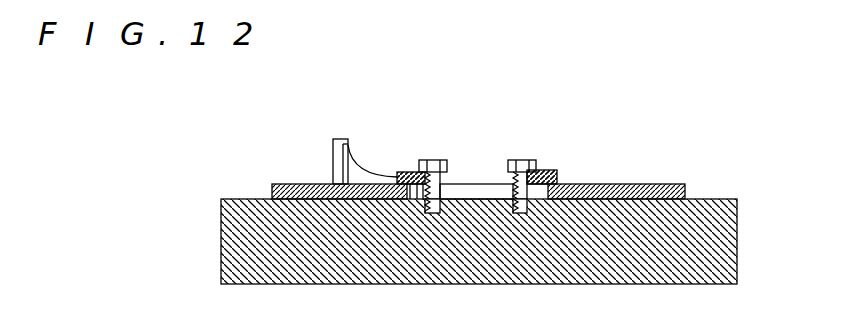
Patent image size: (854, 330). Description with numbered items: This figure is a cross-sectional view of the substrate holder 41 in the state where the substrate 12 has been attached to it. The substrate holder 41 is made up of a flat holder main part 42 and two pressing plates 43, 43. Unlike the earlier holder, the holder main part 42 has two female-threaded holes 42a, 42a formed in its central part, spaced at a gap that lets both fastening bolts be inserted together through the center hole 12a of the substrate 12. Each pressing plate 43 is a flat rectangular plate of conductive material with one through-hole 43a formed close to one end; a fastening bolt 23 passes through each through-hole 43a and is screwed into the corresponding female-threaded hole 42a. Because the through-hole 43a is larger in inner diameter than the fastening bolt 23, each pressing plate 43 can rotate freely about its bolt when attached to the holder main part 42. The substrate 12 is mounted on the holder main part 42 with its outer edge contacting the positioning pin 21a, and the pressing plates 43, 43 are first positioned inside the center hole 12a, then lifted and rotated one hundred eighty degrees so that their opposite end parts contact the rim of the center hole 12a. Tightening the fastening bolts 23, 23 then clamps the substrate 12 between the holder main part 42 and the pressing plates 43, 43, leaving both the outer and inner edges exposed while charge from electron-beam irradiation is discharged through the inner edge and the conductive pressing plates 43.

The substrate 12 is at (652, 184).
The center hole 12a is at (482, 180).
The positioning pin 21a is at (337, 170).
The fastening bolt 23 is at (432, 160).
The substrate holder 41 is at (687, 122).
The holder main part 42 is at (718, 198).
The female-threaded hole 42a is at (437, 213).
The pressing plate 43 is at (343, 139).
The through-hole 43a is at (420, 162).